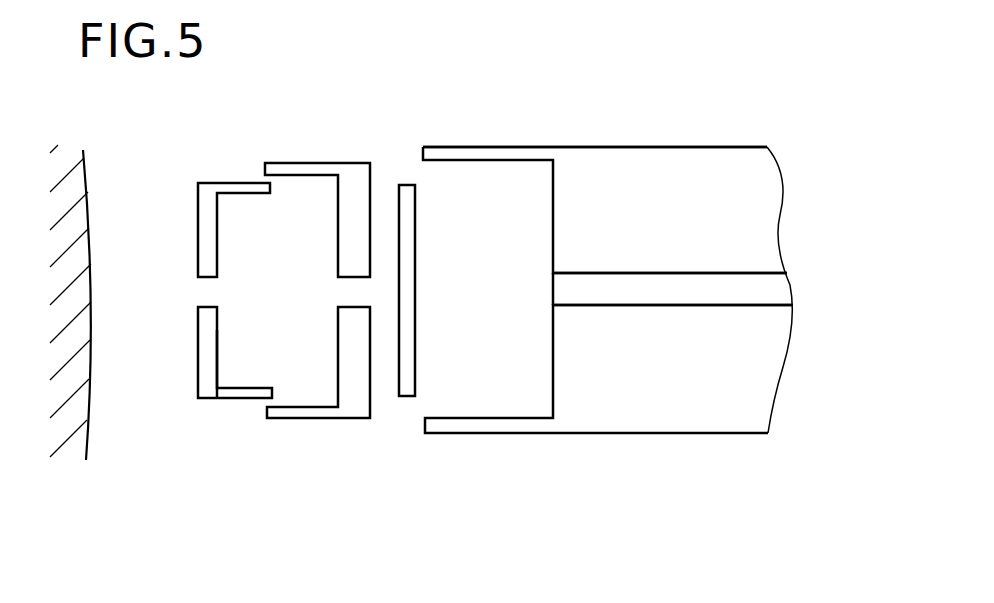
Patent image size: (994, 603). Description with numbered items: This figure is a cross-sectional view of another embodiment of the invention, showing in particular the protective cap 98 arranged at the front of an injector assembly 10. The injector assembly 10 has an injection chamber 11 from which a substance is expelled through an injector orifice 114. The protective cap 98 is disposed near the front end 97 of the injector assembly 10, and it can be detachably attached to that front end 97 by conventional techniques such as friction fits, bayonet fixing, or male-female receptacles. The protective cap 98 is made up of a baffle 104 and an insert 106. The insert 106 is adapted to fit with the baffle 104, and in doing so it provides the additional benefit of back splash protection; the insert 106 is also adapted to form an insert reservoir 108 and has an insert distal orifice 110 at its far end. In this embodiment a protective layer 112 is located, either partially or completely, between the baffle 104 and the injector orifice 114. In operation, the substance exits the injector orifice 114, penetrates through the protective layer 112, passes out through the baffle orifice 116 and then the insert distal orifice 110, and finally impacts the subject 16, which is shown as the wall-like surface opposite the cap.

The injector assembly 10 is at (661, 474).
The injection chamber 11 is at (750, 290).
The subject 16 is at (91, 410).
The front end 97 is at (682, 147).
The protective cap 98 is at (301, 116).
The baffle 104 is at (333, 418).
The insert 106 is at (220, 397).
The insert reservoir 108 is at (238, 352).
The insert distal orifice 110 is at (203, 293).
The protective layer 112 is at (408, 185).
The injector orifice 114 is at (560, 288).
The baffle orifice 116 is at (347, 292).